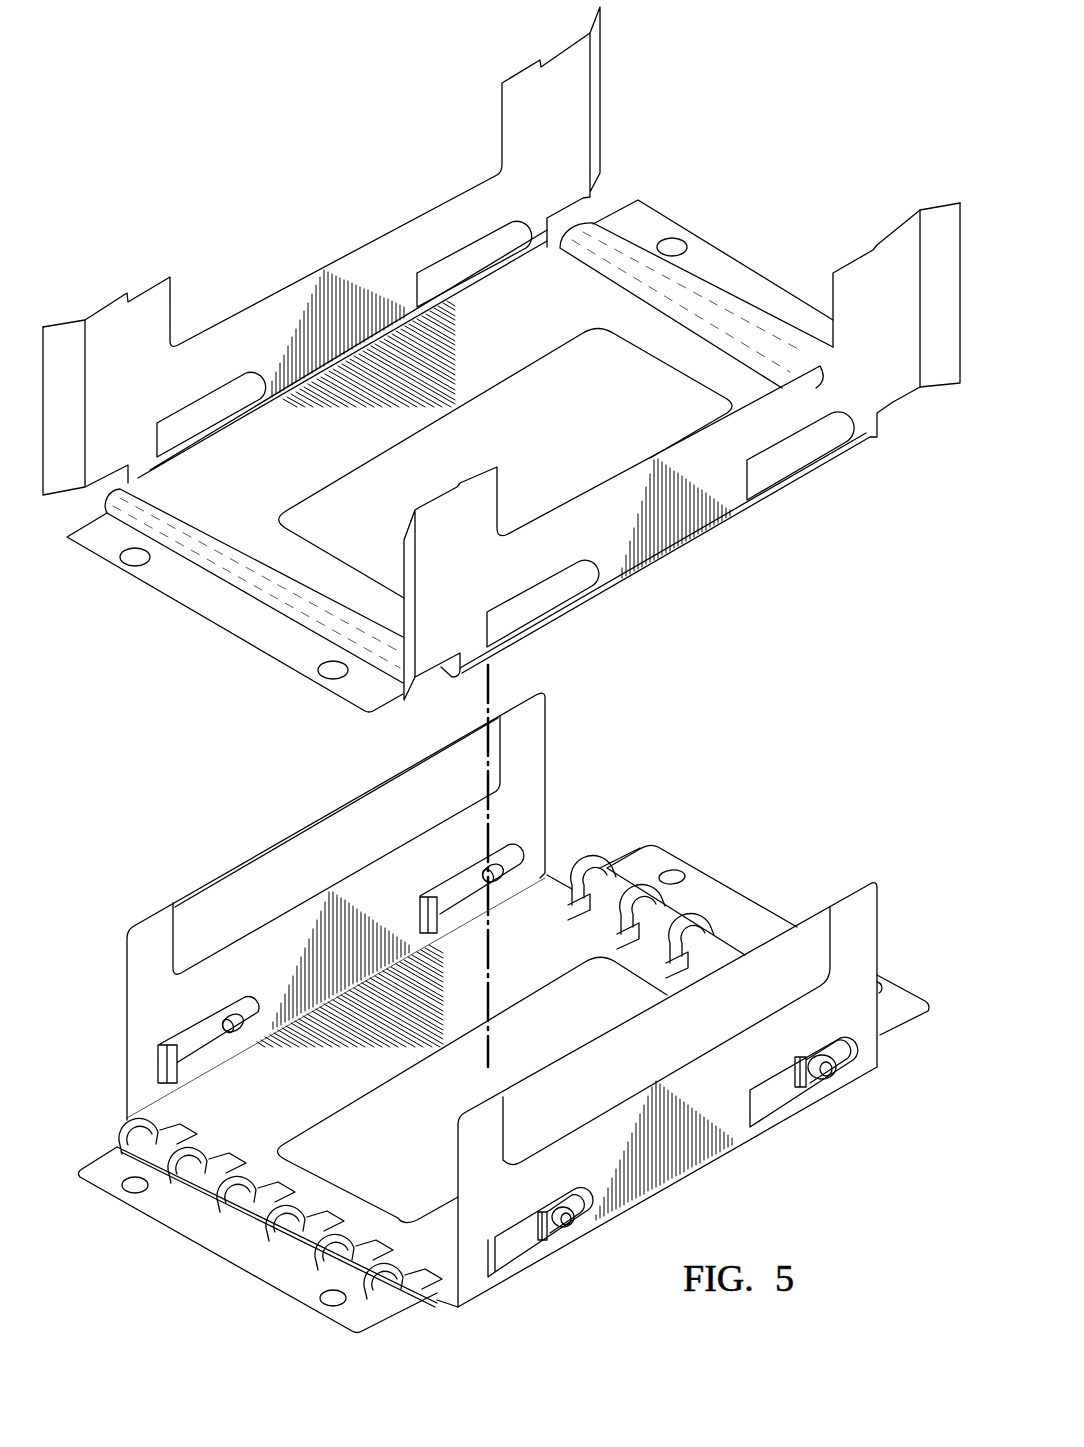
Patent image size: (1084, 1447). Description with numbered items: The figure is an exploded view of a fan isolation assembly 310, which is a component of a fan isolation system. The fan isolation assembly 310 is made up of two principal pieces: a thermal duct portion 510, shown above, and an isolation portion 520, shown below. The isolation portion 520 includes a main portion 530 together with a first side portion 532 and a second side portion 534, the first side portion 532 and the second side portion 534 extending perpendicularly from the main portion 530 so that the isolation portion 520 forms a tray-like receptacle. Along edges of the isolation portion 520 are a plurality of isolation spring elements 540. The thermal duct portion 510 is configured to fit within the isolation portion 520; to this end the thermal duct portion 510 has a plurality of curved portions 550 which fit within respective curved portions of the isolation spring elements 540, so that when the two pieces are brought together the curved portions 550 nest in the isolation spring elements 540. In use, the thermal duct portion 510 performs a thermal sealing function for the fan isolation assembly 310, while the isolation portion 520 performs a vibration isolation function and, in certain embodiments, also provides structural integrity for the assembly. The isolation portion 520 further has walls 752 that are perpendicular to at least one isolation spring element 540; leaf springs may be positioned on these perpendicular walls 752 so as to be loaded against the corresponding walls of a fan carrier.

The fan isolation assembly 310 is at (255, 120).
The thermal duct portion 510 is at (288, 292).
The isolation portion 520 is at (735, 1140).
The main portion 530 is at (557, 878).
The first side portion 532 is at (127, 975).
The second side portion 534 is at (878, 918).
The isolation spring elements 540 is at (607, 851).
The curved portions 550 is at (575, 218).
The perpendicular walls 752 is at (853, 892).